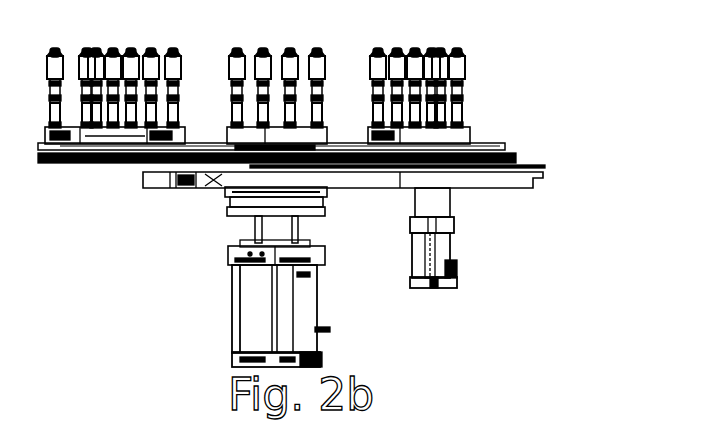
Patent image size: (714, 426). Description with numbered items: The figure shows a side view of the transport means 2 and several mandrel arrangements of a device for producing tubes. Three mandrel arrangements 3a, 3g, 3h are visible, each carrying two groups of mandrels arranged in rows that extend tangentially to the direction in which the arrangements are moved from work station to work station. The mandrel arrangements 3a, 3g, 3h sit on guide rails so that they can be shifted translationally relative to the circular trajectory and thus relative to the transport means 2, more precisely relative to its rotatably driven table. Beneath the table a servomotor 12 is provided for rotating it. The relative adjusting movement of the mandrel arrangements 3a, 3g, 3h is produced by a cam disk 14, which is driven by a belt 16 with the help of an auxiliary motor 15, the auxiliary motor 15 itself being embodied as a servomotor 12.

The transport means 2 is at (553, 219).
The mandrel arrangement 3a is at (460, 136).
The mandrel arrangement 3g is at (117, 162).
The mandrel arrangement 3h is at (218, 179).
The servomotor 12 is at (307, 340).
The cam disk 14 is at (342, 186).
The auxiliary motor 15 is at (443, 257).
The belt 16 is at (367, 200).